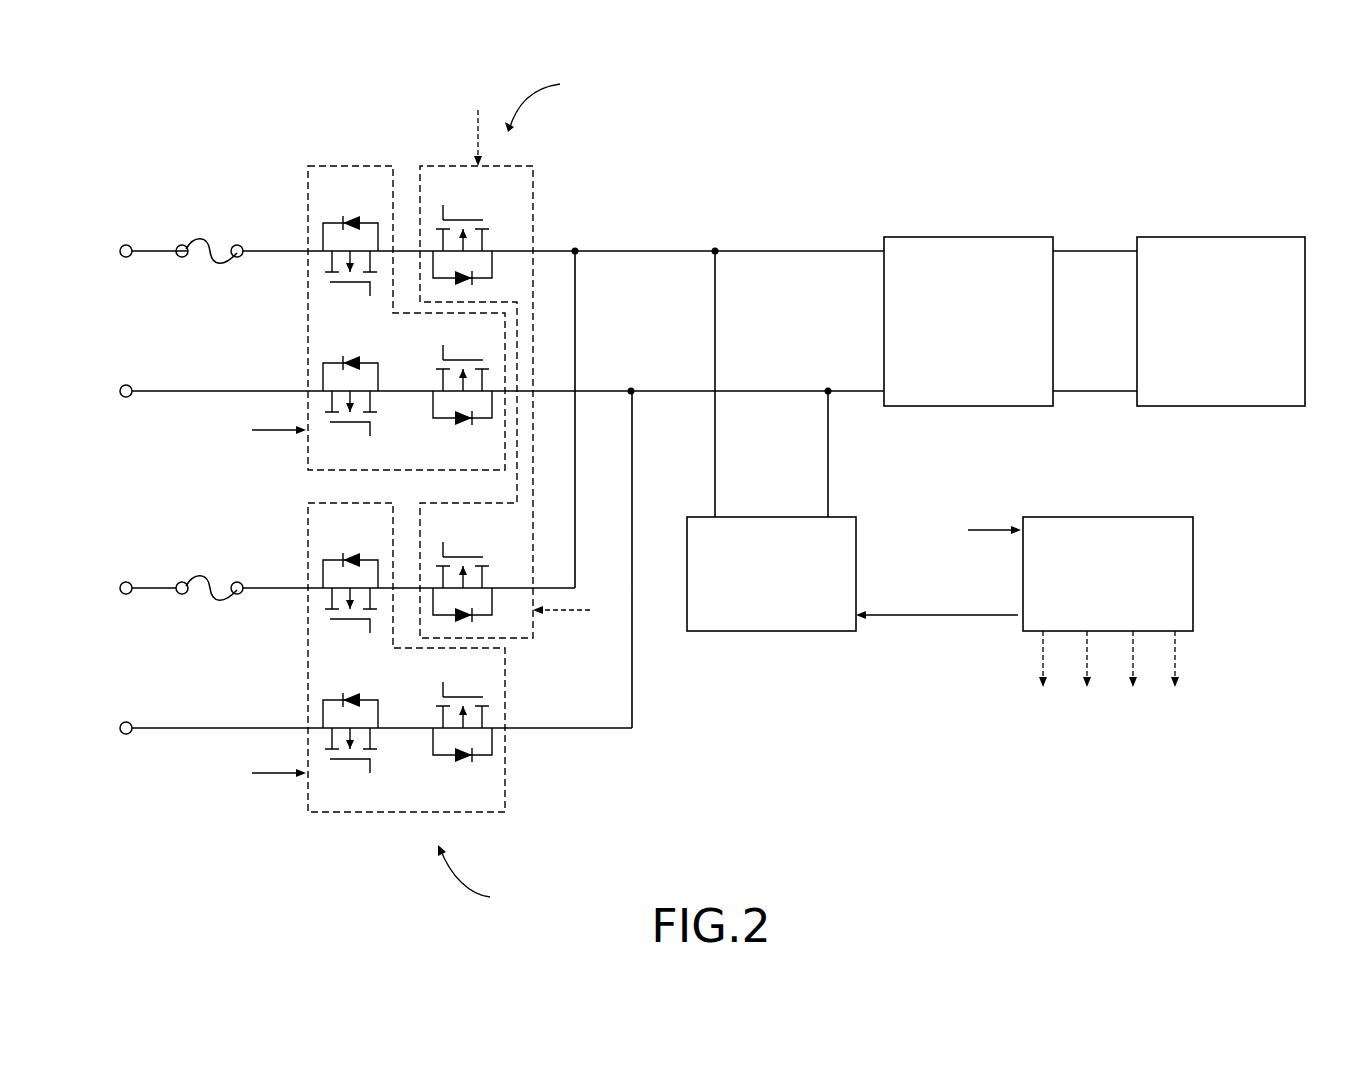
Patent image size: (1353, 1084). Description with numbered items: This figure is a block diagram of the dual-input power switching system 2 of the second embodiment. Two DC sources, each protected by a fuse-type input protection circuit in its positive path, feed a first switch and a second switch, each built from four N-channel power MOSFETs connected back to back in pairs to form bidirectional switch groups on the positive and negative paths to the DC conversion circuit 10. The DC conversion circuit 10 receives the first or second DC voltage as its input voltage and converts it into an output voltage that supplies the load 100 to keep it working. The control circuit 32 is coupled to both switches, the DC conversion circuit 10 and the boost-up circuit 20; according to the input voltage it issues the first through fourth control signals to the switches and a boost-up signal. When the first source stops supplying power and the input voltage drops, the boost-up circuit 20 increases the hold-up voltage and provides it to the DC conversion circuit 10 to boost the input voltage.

The dual-input power switching system 2 is at (717, 82).
The DC conversion circuit 10 is at (966, 238).
The load 100 is at (1220, 238).
The boost-up circuit 20 is at (840, 517).
The control circuit 32 is at (1110, 517).